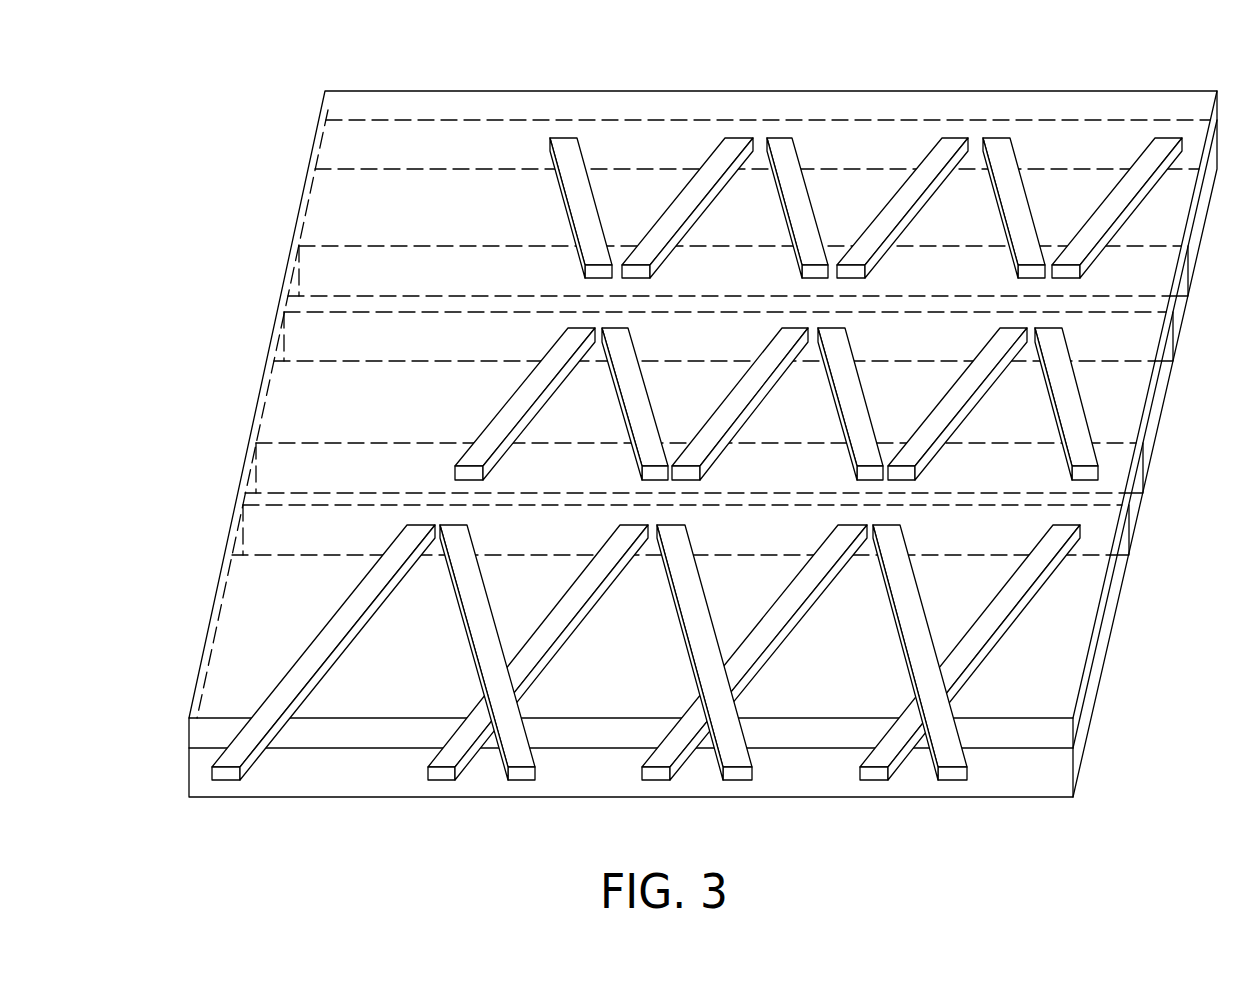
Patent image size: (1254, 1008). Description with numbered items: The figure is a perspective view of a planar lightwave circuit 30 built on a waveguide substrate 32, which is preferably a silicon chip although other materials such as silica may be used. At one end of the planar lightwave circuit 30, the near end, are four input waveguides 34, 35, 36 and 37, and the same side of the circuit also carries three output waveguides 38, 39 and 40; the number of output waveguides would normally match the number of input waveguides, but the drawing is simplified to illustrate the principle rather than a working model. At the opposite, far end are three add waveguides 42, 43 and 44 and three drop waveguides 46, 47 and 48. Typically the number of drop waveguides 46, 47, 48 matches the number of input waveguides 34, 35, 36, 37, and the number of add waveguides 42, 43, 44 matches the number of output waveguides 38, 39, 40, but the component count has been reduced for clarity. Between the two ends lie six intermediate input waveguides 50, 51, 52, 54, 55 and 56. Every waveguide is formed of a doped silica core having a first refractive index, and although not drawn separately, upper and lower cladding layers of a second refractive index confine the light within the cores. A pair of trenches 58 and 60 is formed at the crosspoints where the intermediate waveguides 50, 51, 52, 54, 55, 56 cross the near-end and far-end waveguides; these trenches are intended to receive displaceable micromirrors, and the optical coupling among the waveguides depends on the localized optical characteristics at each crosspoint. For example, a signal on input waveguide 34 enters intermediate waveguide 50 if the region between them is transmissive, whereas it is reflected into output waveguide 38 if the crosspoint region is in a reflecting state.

The planar lightwave circuit 30 is at (225, 178).
The waveguide substrate 32 is at (1017, 733).
The input waveguide 34 is at (320, 642).
The input waveguide 35 is at (535, 650).
The input waveguide 36 is at (753, 650).
The input waveguide 37 is at (975, 652).
The output waveguide 38 is at (470, 613).
The output waveguide 39 is at (688, 615).
The output waveguide 40 is at (902, 613).
The add waveguide 42 is at (562, 140).
The add waveguide 43 is at (785, 140).
The add waveguide 44 is at (997, 140).
The drop waveguide 46 is at (738, 140).
The drop waveguide 47 is at (955, 140).
The drop waveguide 48 is at (1170, 140).
The intermediate input waveguide 50 is at (502, 421).
The intermediate input waveguide 51 is at (740, 395).
The intermediate input waveguide 52 is at (953, 396).
The intermediate input waveguide 54 is at (625, 378).
The intermediate input waveguide 55 is at (837, 378).
The intermediate input waveguide 56 is at (1058, 378).
The trench 58 is at (1135, 509).
The trench 60 is at (1180, 305).